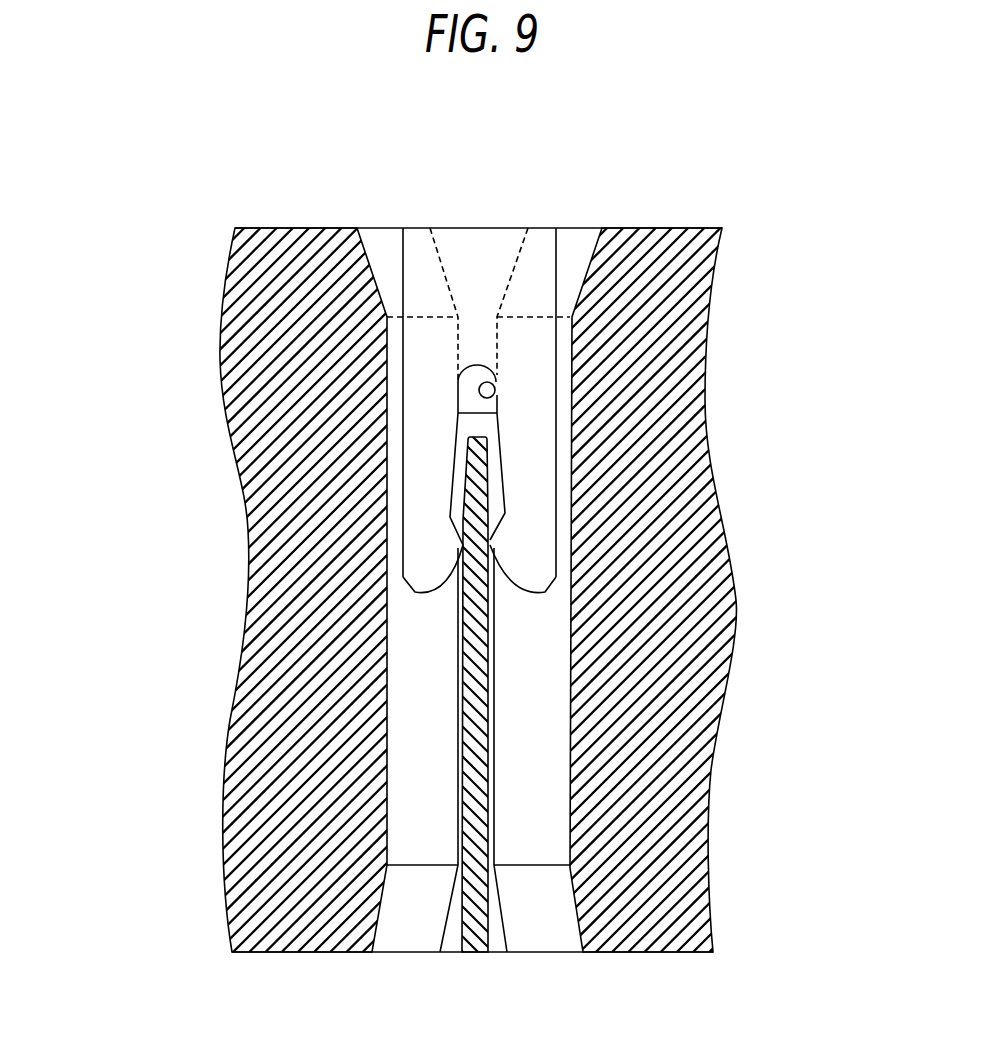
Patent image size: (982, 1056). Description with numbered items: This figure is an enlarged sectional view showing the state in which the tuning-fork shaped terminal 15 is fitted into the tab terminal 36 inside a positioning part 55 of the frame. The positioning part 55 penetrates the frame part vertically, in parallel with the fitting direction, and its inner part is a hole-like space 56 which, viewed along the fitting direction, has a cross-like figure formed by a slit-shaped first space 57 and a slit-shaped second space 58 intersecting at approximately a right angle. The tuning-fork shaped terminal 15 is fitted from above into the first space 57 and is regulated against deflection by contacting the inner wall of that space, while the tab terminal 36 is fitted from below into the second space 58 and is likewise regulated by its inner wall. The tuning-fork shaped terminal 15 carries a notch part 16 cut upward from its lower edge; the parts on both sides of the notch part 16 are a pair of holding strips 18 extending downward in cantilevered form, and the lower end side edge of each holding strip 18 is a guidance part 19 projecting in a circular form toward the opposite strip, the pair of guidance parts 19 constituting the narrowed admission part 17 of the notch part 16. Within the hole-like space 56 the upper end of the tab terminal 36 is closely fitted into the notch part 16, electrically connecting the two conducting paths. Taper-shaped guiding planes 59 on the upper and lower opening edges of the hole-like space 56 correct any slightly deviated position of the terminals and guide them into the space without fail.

The tuning-fork shaped terminal 15 is at (575, 244).
The notch part 16 is at (495, 397).
The admission part 17 is at (490, 598).
The holding strips 18 is at (417, 473).
The guidance part 19 is at (465, 542).
The tab terminal 36 is at (478, 449).
The positioning part 55 is at (382, 200).
The hole-like space 56 is at (435, 677).
The first space 57 is at (566, 357).
The second space 58 is at (496, 730).
The guiding plane 59 is at (513, 260).